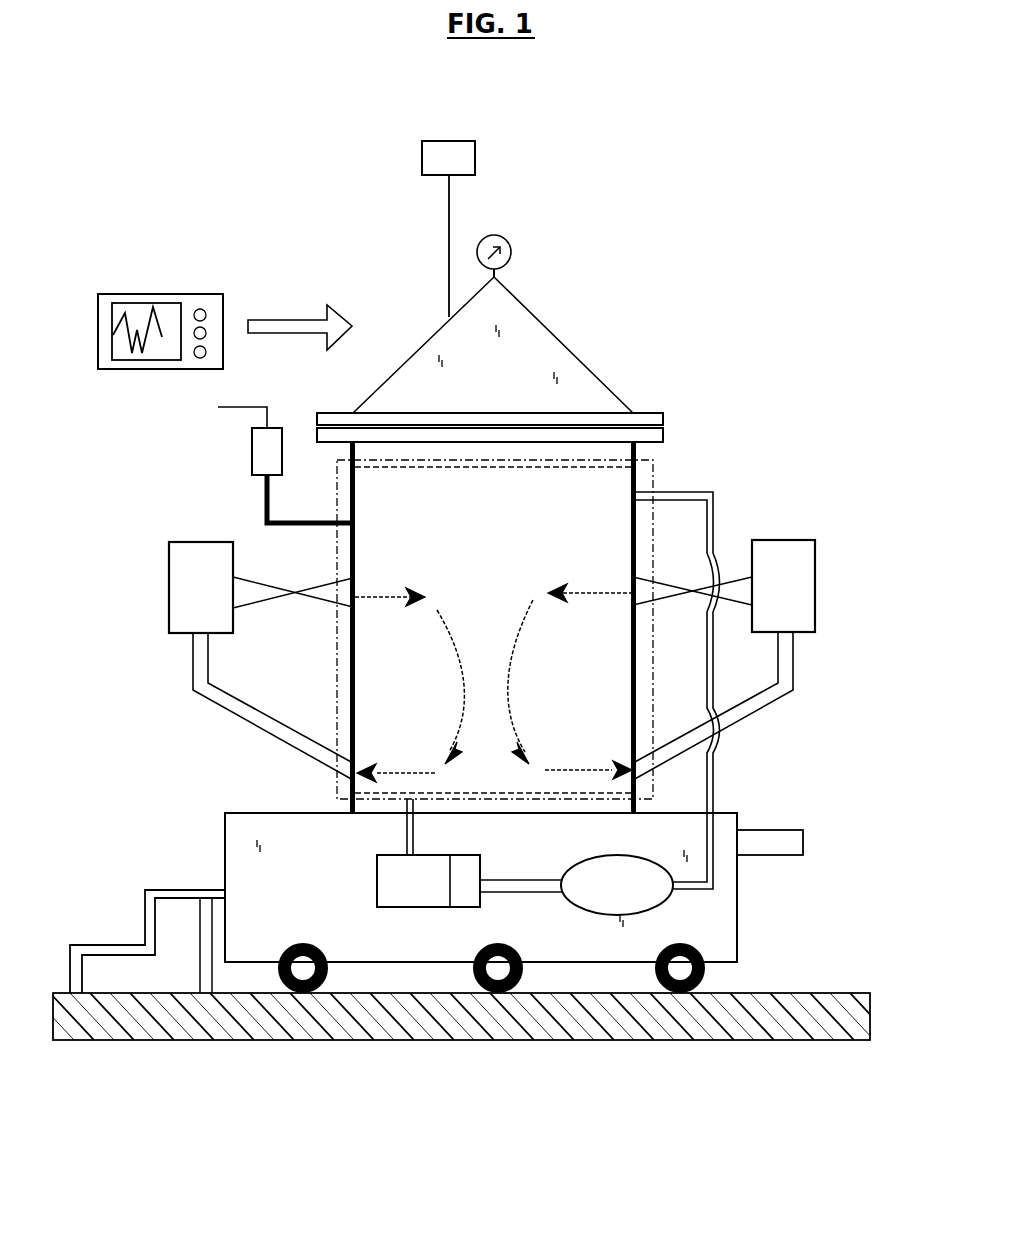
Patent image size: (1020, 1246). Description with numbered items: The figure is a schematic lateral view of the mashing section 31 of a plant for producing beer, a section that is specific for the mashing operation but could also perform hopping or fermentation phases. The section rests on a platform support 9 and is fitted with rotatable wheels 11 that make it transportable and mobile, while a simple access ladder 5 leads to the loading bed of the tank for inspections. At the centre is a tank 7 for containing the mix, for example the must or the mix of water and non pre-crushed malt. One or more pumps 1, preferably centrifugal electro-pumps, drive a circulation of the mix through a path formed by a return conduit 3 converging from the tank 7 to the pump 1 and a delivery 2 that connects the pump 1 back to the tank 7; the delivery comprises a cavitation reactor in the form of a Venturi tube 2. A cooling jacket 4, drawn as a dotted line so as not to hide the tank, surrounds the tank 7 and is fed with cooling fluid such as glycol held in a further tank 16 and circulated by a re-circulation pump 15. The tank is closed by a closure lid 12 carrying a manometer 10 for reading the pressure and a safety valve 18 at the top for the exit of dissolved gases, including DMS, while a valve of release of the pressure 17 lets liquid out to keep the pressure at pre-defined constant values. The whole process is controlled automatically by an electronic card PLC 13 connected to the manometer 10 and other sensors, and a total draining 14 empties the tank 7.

The mashing section 31 is at (735, 168).
The electronic card PLC 13 is at (135, 294).
The safety valve 18 is at (475, 153).
The manometer 10 is at (512, 252).
The closure lid 12 is at (509, 390).
The valve of release of the pressure 17 is at (265, 456).
The tank 7 is at (412, 516).
The pump 1 is at (209, 601).
The delivery with cavitation reactor (Venturi tube) 2 is at (258, 595).
The return conduit 3 is at (755, 703).
The cooling jacket 4 is at (338, 786).
The re-circulation pump 15 is at (427, 901).
The further tank 16 is at (627, 899).
The total draining 14 is at (784, 858).
The access ladder 5 is at (103, 945).
The rotatable wheels 11 is at (665, 990).
The platform support 9 is at (737, 1040).